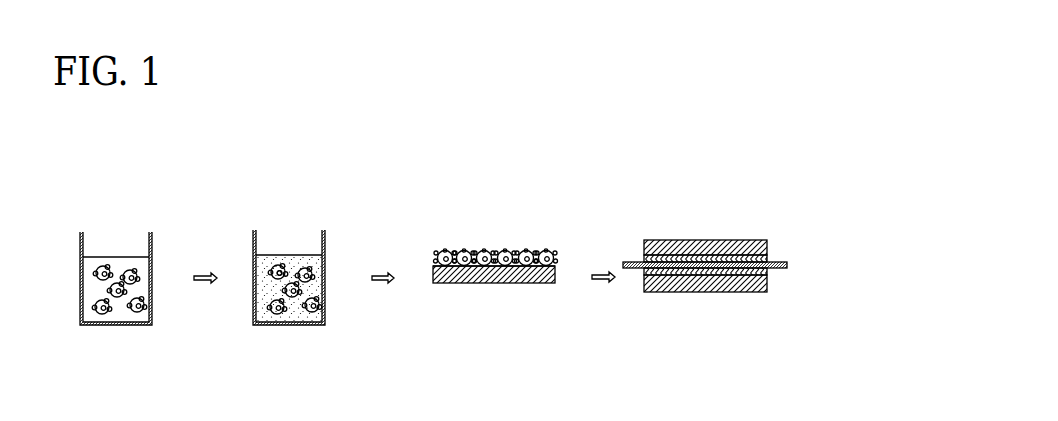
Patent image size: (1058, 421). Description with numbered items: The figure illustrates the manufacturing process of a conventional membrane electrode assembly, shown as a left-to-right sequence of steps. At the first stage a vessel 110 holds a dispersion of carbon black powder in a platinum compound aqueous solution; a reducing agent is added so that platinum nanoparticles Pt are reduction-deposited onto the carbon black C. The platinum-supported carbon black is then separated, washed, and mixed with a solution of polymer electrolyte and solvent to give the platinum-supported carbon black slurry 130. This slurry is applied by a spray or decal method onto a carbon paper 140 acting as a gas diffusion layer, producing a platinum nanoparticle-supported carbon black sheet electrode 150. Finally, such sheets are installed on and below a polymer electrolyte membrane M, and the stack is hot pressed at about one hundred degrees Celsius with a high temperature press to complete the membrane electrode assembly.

The first solution (carbon support dispersion) in vessel 110 is at (145, 272).
The platinum-supported carbon black slurry 130 is at (319, 239).
The carbon paper 140 is at (518, 250).
The platinum nanoparticle-supported carbon black sheet electrode 150 is at (482, 283).
The carbon support particle C is at (278, 265).
The platinum particle Pt is at (284, 268).
The polymer electrolyte membrane M is at (778, 262).